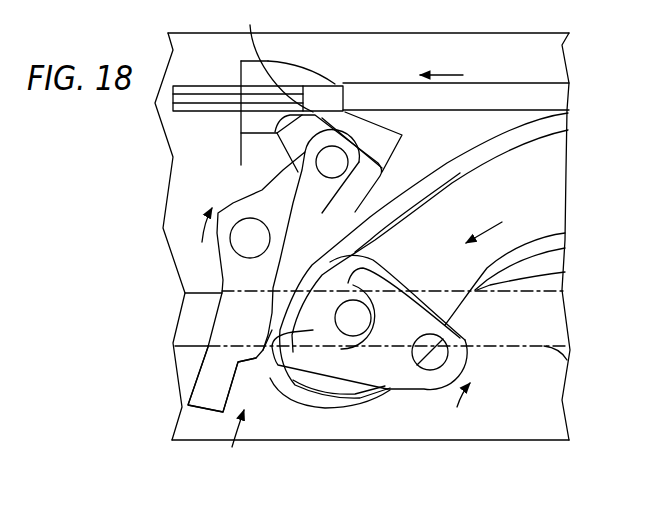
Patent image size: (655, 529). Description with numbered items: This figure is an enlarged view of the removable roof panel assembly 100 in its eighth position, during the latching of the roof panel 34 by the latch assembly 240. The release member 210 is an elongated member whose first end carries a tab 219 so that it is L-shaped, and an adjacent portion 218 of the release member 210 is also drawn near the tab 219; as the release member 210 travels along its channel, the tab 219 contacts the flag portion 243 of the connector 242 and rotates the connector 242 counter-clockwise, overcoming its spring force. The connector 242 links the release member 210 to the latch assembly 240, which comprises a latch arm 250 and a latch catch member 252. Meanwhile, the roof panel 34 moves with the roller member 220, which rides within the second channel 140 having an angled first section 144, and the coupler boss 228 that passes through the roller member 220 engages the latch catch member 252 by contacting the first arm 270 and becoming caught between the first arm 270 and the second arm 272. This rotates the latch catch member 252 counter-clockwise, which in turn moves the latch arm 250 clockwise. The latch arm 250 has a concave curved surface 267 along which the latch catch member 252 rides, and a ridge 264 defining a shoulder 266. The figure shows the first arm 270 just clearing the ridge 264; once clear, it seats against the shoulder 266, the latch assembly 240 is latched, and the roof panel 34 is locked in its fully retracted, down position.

The removable roof panel assembly 100 is at (376, 14).
The release member 210 is at (482, 83).
The guide member 218 is at (274, 83).
The tab 219 is at (314, 78).
The flag portion 243 is at (241, 133).
The connector 242 is at (283, 160).
The latch arm 250 is at (223, 276).
The curved surface 267 is at (413, 203).
The roller member 220 is at (388, 228).
The second arm 272 is at (380, 265).
The boss 228 is at (357, 312).
The second channel 140 is at (525, 205).
The angled first section 144 is at (565, 272).
The roof panel 34 is at (567, 360).
The latch catch member 252 is at (470, 362).
The first arm 270 is at (300, 368).
The ridge 264 is at (263, 352).
The shoulder 266 is at (231, 398).
The latch assembly 240 is at (224, 444).